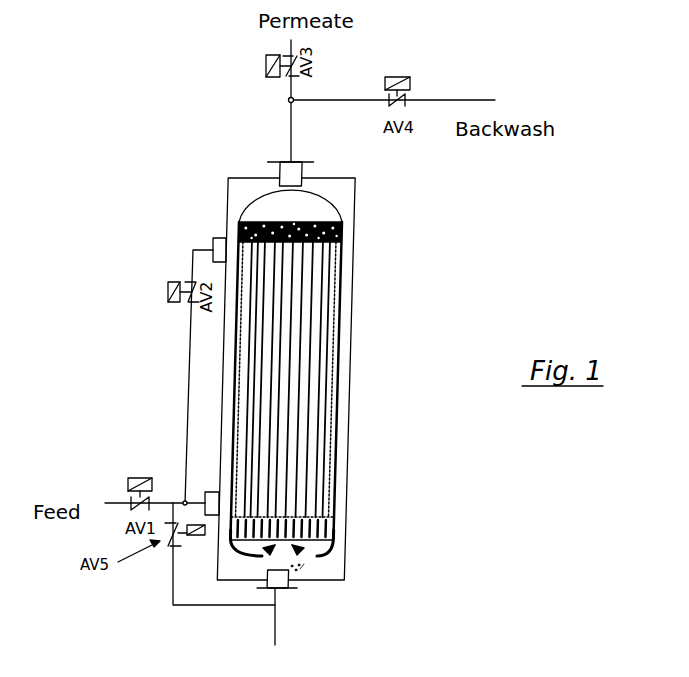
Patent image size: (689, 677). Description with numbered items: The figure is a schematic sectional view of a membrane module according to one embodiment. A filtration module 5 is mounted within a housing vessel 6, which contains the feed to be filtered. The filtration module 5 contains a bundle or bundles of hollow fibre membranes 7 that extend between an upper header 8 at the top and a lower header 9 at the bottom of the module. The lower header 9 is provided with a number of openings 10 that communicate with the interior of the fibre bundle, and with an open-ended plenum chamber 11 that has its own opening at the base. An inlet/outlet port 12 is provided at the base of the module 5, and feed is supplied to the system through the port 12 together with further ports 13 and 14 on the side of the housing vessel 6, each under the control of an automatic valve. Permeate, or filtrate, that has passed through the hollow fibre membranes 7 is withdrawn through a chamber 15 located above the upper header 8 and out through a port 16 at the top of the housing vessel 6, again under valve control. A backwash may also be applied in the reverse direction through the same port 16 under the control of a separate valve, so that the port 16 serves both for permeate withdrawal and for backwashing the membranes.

The filtration module 5 is at (340, 333).
The housing vessel 6 is at (357, 217).
The hollow fibre membranes 7 is at (243, 463).
The upper header 8 is at (340, 231).
The lower header 9 is at (335, 526).
The openings 10 is at (293, 571).
The plenum chamber 11 is at (268, 551).
The inlet/outlet port 12 is at (278, 600).
The port 13 is at (213, 240).
The port 14 is at (210, 517).
The chamber 15 is at (298, 203).
The port 16 is at (285, 160).